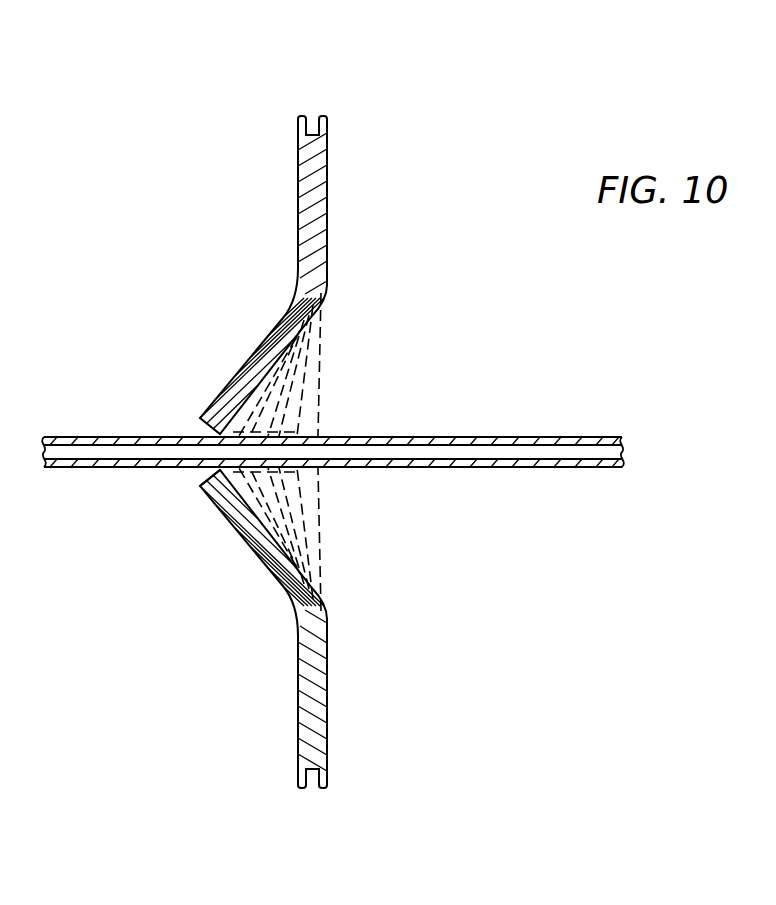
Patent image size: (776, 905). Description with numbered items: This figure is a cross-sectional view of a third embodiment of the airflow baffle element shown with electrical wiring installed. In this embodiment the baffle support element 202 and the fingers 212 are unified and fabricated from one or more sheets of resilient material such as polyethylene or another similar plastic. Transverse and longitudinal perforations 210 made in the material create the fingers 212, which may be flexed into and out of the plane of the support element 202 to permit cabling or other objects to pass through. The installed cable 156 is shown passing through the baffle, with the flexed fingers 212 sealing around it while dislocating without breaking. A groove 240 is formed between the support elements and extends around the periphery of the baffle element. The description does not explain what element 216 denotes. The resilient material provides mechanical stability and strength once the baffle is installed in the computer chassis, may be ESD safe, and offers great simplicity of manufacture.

The baffle support element 202 is at (328, 214).
The groove 240 is at (315, 110).
The fingers 212 is at (262, 352).
The perforations 210 is at (352, 353).
The tip edge 216 is at (193, 497).
The cable 156 is at (592, 437).